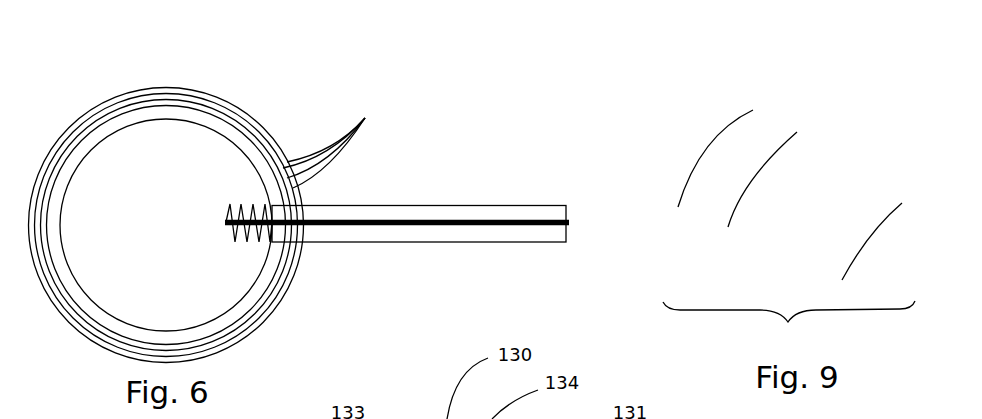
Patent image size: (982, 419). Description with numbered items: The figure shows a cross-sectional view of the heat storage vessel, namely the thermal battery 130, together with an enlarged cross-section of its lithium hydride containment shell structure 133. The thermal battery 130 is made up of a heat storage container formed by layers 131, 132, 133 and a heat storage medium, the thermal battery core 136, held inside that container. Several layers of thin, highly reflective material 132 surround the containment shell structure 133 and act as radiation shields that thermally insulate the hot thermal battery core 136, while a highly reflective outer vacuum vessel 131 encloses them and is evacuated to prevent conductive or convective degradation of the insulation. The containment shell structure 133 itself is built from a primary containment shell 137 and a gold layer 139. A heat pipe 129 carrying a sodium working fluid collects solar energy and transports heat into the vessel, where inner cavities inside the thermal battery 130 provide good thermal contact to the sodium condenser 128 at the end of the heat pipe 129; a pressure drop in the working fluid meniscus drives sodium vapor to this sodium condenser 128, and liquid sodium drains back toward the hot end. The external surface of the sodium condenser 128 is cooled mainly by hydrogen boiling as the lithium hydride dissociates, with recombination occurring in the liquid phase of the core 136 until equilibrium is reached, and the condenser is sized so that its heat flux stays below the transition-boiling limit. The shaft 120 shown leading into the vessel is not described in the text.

In FIG. 6, the elongate shaft 120 is at (418, 194).
In FIG. 6, the sodium condenser 128 is at (252, 241).
In FIG. 6, the heat pipe 129 is at (523, 214).
In FIG. 6, the thermal battery 130 is at (188, 83).
In FIG. 6, the outer vacuum vessel 131 is at (278, 142).
In FIG. 6, the layers of highly reflective material 132 is at (346, 142).
In FIG. 6, the containment shell structure 133 is at (74, 190).
In FIG. 9, the containment shell structure 133 is at (828, 121).
In FIG. 6, the thermal battery core 136 is at (193, 163).
In FIG. 9, the primary containment shell 137 is at (793, 208).
In FIG. 9, the gold layer 139 is at (723, 162).